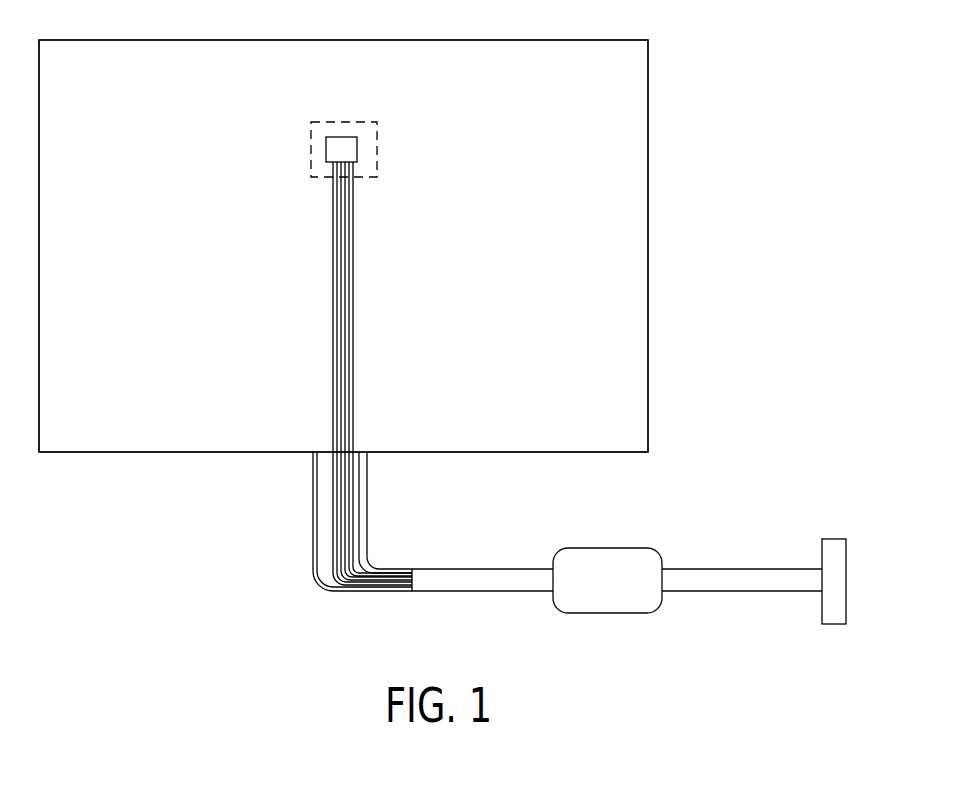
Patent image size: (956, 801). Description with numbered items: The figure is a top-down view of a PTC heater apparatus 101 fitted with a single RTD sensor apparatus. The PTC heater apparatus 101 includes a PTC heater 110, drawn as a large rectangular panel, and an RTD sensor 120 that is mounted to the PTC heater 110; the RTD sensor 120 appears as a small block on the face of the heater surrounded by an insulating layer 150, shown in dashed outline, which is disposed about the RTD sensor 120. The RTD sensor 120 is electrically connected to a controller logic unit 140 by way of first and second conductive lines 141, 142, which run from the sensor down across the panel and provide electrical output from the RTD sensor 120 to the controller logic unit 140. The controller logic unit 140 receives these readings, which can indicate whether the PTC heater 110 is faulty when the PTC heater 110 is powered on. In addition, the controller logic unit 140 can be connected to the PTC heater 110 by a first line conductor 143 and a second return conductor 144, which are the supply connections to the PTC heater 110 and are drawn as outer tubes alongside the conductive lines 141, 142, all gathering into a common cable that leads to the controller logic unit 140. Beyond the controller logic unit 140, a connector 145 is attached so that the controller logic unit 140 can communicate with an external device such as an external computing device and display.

The PTC heater apparatus 101 is at (672, 114).
The PTC heater 110 is at (649, 375).
The RTD sensor 120 is at (326, 150).
The insulating layer 150 is at (380, 150).
The first conductive line 141 is at (332, 305).
The second conductive line 142 is at (353, 283).
The first line conductor 143 is at (313, 552).
The second return conductor 144 is at (367, 505).
The controller logic unit 140 is at (627, 596).
The connector 145 is at (832, 538).